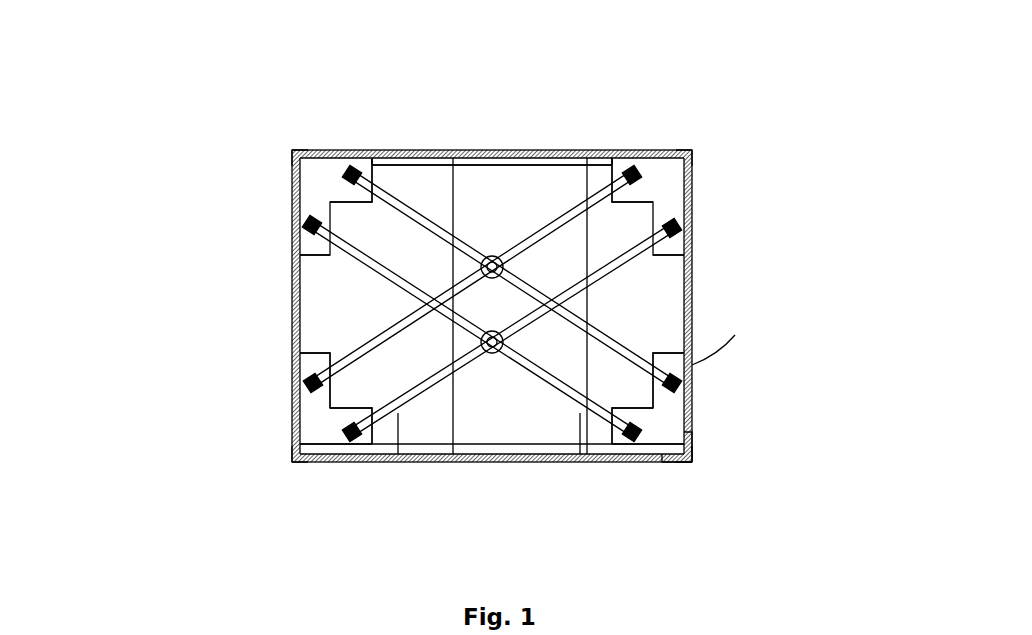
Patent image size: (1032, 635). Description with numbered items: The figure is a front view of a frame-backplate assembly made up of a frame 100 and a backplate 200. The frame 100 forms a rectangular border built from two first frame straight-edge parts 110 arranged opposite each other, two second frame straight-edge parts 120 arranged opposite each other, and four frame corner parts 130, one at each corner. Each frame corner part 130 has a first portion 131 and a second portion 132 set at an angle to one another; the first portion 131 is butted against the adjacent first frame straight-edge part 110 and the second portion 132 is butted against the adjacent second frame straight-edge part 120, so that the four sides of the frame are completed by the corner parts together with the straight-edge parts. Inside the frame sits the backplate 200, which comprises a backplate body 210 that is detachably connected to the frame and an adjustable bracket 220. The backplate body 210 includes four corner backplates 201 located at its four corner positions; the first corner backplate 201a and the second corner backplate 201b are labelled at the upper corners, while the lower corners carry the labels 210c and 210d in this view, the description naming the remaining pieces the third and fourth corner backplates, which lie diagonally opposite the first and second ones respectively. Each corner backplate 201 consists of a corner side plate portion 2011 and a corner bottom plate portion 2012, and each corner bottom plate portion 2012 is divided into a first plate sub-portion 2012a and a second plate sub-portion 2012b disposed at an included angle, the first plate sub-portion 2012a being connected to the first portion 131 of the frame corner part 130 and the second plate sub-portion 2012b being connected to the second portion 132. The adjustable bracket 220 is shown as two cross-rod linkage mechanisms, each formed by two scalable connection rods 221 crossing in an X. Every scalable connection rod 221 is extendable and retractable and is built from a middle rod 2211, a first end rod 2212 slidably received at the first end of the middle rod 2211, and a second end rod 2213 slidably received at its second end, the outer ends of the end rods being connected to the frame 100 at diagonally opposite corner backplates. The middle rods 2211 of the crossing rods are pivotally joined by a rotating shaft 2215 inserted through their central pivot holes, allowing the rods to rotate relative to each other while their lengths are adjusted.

The frame 100 is at (402, 148).
The first frame straight-edge part 110 is at (560, 150).
The second frame straight-edge part 120 is at (292, 308).
The frame corner part 130 is at (297, 152).
The first portion 131 is at (694, 457).
The second portion 132 is at (697, 383).
The backplate 200 is at (350, 276).
The corner backplate 201 is at (310, 190).
The first corner backplate 201a is at (335, 150).
The second corner backplate 201b is at (657, 150).
The corner side plate portion 2011 is at (692, 183).
The corner bottom plate portion 2012 is at (162, 377).
The first plate sub-portion 2012a is at (292, 418).
The second plate sub-portion 2012b is at (292, 362).
The backplate body 210 is at (310, 214).
The third slider 210c is at (662, 462).
The fourth slider 210d is at (328, 462).
The adjustable bracket 220 is at (337, 354).
The scalable connection rod 221 is at (455, 150).
The middle rod 2211 is at (455, 462).
The first end rod 2212 is at (398, 462).
The second end rod 2213 is at (587, 462).
The rotating shaft 2215 is at (493, 354).